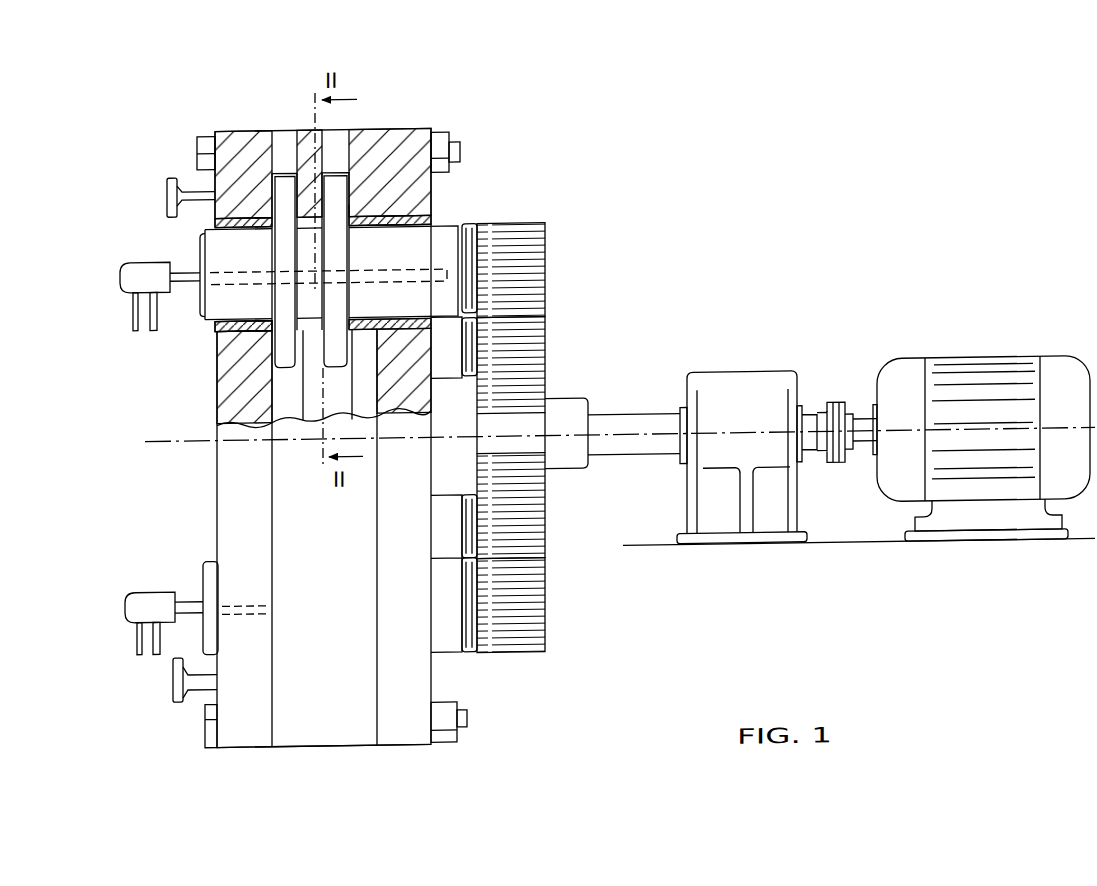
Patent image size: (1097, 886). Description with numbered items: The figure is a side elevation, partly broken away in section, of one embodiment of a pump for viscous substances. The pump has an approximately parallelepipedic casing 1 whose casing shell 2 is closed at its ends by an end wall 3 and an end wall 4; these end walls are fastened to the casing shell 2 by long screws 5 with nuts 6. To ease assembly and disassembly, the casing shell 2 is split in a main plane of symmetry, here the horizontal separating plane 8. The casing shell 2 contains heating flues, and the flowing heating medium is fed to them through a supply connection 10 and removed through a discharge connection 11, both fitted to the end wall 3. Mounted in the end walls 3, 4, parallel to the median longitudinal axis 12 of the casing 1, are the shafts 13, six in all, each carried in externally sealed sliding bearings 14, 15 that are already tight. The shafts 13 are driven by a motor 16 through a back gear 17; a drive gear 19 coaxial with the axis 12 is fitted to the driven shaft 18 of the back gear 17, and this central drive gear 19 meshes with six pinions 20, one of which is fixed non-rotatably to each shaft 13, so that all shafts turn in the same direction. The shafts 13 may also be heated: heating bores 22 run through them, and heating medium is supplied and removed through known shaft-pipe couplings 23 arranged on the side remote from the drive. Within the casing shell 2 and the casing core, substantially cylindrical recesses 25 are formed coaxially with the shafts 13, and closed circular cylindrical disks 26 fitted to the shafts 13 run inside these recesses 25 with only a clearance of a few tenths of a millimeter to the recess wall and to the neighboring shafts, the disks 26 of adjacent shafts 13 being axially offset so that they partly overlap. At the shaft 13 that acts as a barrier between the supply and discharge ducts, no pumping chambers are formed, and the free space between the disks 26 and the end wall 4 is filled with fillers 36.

The casing 1 is at (340, 753).
The casing shell 2 is at (308, 706).
The end wall 3 is at (228, 146).
The end wall 4 is at (402, 150).
The long screw 5 is at (212, 736).
The nut 6 is at (448, 734).
The horizontal separating plane 8 is at (300, 450).
The supply connection 10 is at (167, 194).
The discharge connection 11 is at (173, 681).
The median longitudinal axis 12 is at (150, 438).
The shaft 13 is at (222, 299).
The bearing 14 is at (216, 328).
The bearing 15 is at (433, 220).
The motor 16 is at (988, 410).
The back gear 17 is at (733, 406).
The driven shaft 18 is at (640, 430).
The drive gear 19 is at (527, 349).
The pinion 20 is at (535, 271).
The heating bore 22 is at (237, 271).
The shaft-pipe coupling 23 is at (135, 275).
The recess 25 is at (283, 170).
The disk 26 is at (432, 184).
The filler 36 is at (308, 197).